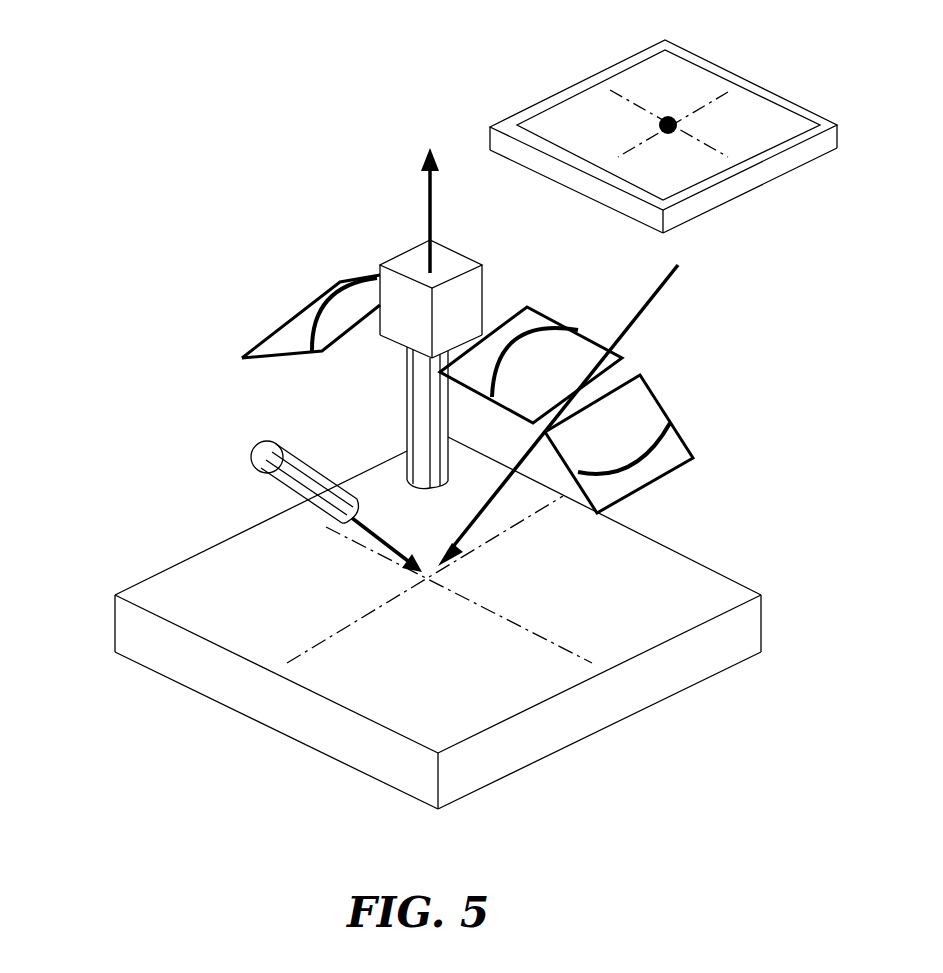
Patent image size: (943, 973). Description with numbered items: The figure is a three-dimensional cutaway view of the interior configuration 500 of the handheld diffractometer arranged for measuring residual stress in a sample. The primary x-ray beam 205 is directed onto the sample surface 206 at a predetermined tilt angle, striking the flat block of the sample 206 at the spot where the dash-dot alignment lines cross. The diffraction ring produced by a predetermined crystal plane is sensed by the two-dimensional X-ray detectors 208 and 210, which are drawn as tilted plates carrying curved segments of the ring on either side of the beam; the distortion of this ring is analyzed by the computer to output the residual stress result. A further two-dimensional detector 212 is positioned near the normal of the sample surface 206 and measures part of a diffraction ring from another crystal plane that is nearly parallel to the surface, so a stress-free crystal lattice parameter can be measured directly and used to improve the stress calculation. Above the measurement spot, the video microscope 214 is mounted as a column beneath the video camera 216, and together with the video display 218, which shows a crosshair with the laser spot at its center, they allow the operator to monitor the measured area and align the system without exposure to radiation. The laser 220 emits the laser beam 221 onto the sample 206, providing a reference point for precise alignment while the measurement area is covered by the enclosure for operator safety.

The interior configuration 500 is at (150, 333).
The primary x-ray beam 205 is at (637, 322).
The sample surface 206 is at (191, 665).
The two-dimensional X-ray detector 208 is at (640, 410).
The two-dimensional X-ray detector 210 is at (568, 350).
The two-dimensional detector 212 is at (300, 321).
The video microscope 214 is at (423, 410).
The video camera 216 is at (460, 287).
The video display 218 is at (569, 117).
The laser 220 is at (258, 461).
The probe direction arrow 221 is at (365, 541).